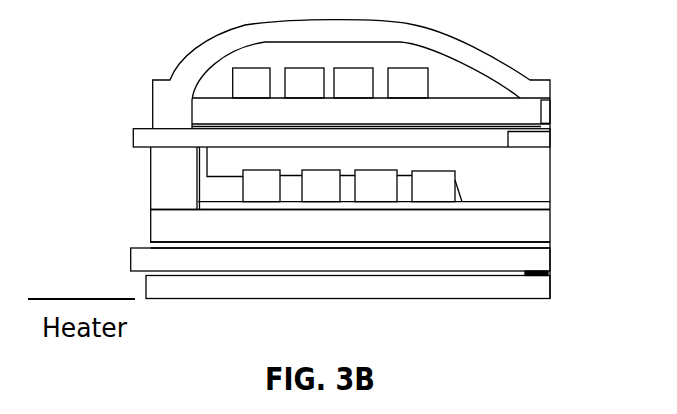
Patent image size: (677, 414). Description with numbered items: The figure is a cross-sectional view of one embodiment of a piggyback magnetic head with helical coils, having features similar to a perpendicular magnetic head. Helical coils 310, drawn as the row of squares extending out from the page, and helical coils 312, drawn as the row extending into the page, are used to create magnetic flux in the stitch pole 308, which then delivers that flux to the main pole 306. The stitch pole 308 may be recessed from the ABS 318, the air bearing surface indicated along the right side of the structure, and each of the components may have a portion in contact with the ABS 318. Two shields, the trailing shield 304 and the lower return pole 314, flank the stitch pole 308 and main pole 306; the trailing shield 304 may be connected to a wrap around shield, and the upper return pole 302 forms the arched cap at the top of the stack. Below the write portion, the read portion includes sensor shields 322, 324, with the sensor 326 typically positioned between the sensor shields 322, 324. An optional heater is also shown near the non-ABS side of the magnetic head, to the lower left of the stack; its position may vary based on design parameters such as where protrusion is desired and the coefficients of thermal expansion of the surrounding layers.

The upper return pole 302 is at (483, 53).
The trailing shield 304 is at (552, 110).
The main pole 306 is at (552, 140).
The stitch pole 308 is at (502, 148).
The helical coils 310 is at (233, 86).
The helical coils 312 is at (243, 169).
The lower return pole 314 is at (386, 234).
The ABS 318 is at (551, 213).
The sensor shield 322 is at (131, 262).
The sensor shield 324 is at (145, 287).
The sensor 326 is at (542, 270).